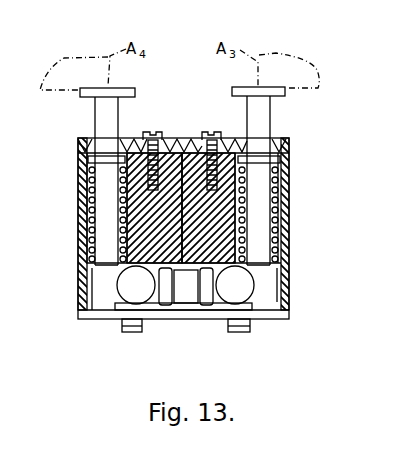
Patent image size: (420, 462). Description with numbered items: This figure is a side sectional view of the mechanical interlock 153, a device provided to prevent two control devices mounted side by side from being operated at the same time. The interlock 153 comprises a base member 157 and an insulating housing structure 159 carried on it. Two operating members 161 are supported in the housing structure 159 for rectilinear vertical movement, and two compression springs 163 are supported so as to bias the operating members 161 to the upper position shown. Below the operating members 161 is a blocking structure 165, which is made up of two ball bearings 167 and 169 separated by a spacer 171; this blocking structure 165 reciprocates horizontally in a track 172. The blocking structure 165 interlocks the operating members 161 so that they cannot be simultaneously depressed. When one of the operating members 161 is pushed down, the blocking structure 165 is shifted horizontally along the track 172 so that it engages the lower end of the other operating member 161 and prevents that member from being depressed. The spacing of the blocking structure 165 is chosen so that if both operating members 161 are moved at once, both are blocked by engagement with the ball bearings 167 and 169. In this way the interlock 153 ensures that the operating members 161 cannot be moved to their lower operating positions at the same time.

The mechanical interlock 153 is at (43, 171).
The base member 157 is at (92, 322).
The insulating housing structure 159 is at (173, 140).
The operating members 161 is at (96, 116).
The compression springs 163 is at (88, 204).
The blocking structure 165 is at (187, 270).
The ball bearing 167 is at (127, 291).
The ball bearing 169 is at (245, 300).
The spacer 171 is at (207, 300).
The track 172 is at (155, 304).